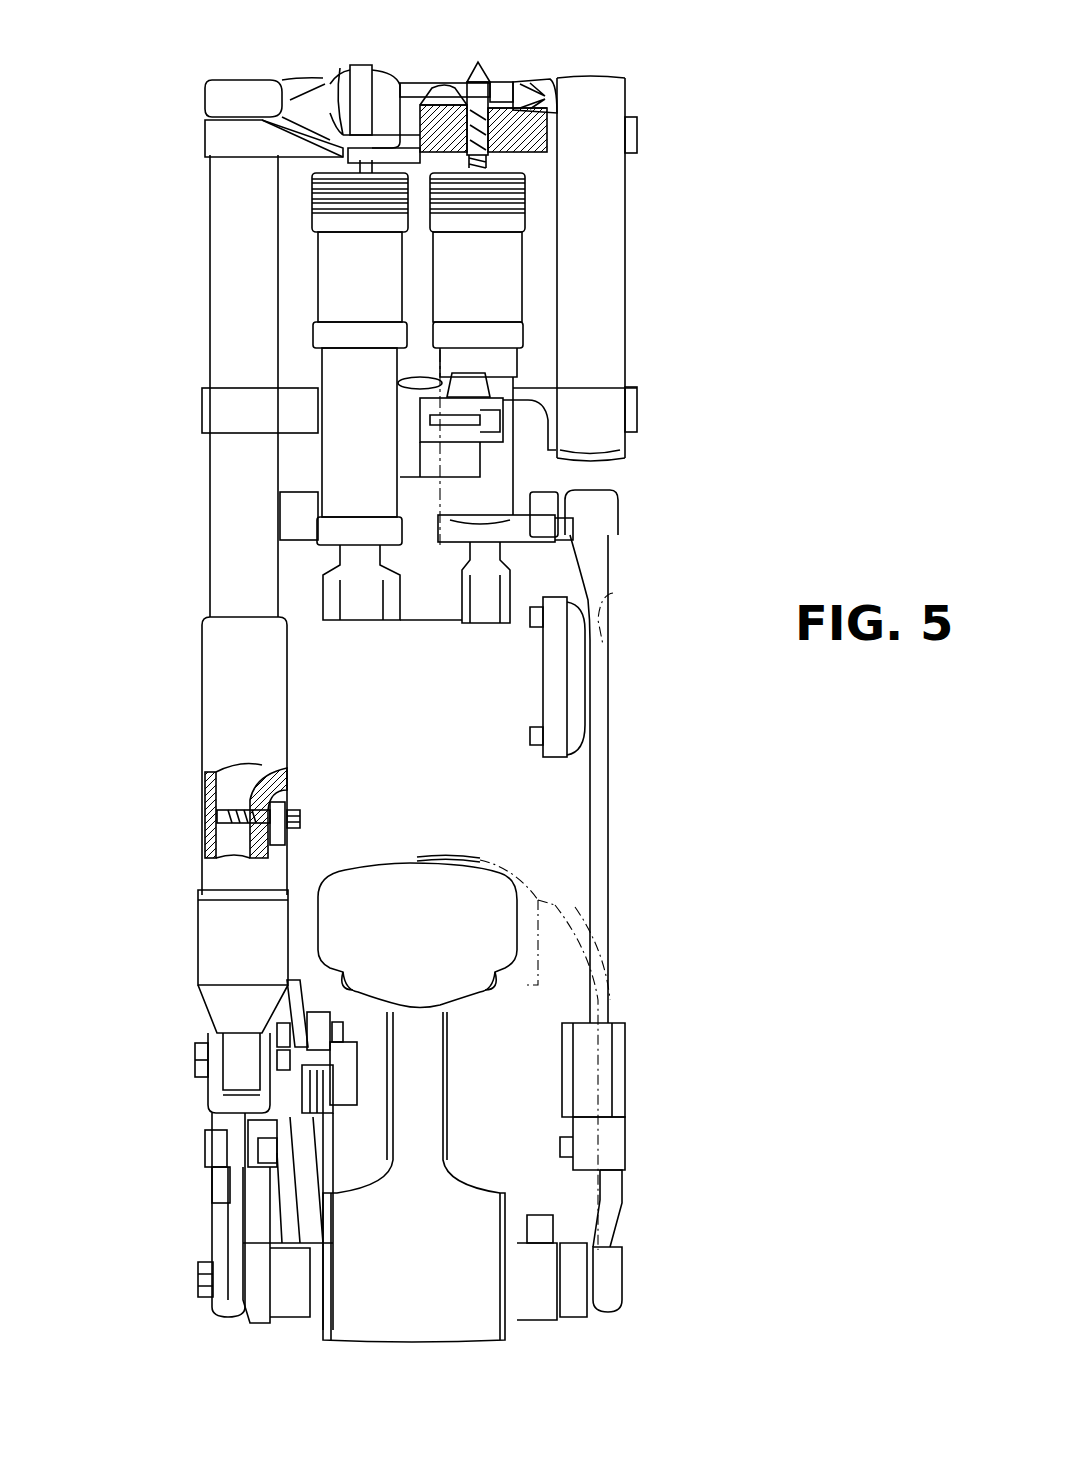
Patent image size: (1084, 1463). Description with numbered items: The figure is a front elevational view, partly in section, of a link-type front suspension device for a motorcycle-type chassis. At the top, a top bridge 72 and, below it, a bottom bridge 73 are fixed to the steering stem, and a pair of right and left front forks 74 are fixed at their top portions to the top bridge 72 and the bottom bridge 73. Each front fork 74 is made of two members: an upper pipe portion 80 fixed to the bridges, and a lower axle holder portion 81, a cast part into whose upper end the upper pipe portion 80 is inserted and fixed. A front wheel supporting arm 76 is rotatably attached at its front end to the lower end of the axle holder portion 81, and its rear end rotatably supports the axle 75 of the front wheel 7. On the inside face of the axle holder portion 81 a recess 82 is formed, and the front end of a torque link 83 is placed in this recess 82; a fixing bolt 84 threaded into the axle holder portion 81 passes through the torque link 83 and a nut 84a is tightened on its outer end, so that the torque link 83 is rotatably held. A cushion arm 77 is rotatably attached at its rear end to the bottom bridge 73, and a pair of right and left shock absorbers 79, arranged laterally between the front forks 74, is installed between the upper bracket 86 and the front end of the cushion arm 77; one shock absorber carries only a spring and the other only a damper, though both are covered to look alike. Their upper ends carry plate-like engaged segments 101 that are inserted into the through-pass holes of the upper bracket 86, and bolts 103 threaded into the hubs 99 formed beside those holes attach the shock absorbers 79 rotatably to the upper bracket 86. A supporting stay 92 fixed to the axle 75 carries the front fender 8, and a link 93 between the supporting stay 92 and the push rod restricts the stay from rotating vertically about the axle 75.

The front wheel 7 is at (400, 860).
The front fender 8 is at (467, 857).
The top bridge 72 is at (215, 98).
The bottom bridge 73 is at (205, 420).
The front fork 74 is at (206, 342).
The axle 75 is at (545, 1318).
The front wheel supporting arm 76 is at (220, 1223).
The cushion arm 77 is at (417, 598).
The shock absorber 79 is at (317, 277).
The upper pipe portion 80 is at (210, 545).
The axle holder portion 81 is at (202, 660).
The recess 82 is at (282, 790).
The torque link 83 is at (285, 968).
The fixing bolt 84 is at (300, 815).
The nut 84a is at (300, 828).
The upper bracket 86 is at (637, 127).
The supporting stay 92 is at (613, 597).
The link 93 is at (543, 700).
The hub 99 is at (327, 95).
The plate-like engaged segment 101 is at (358, 72).
The bolt 103 is at (512, 84).